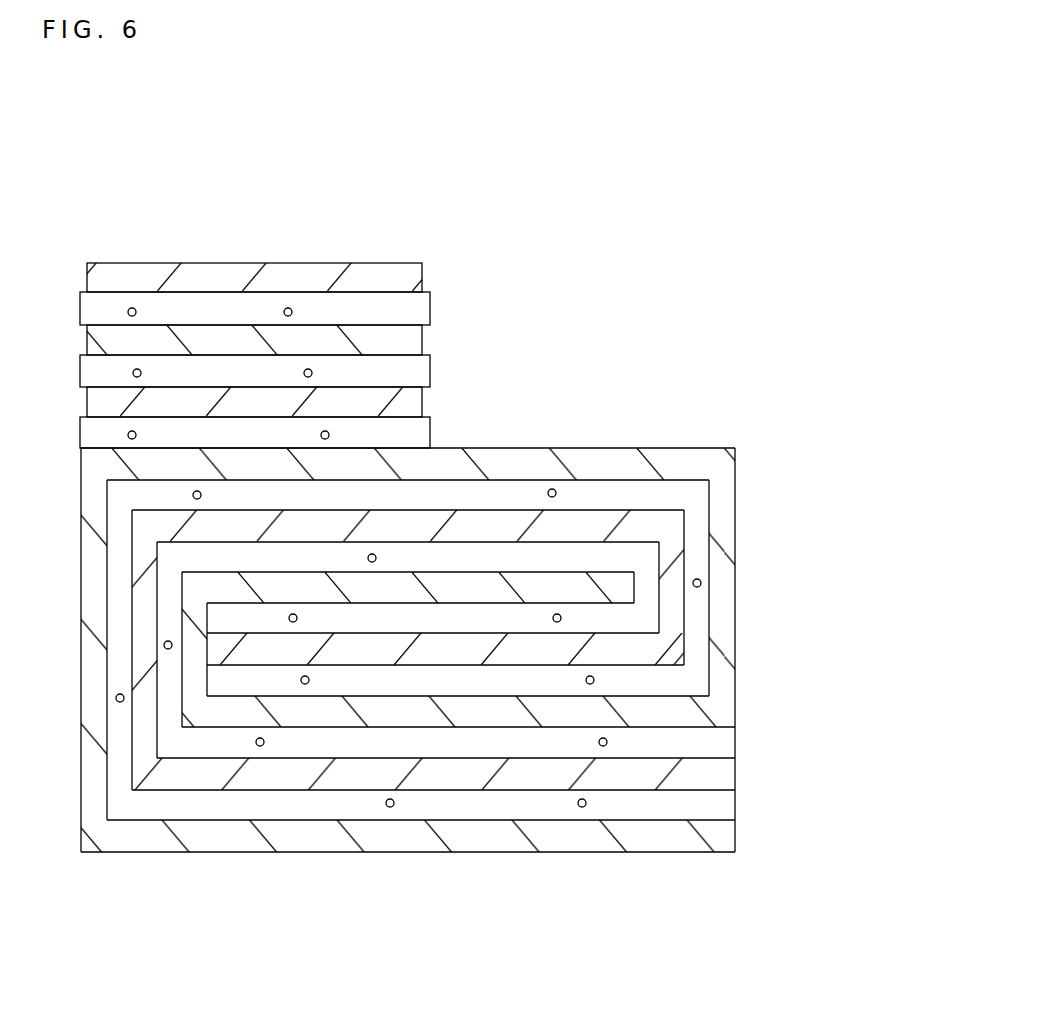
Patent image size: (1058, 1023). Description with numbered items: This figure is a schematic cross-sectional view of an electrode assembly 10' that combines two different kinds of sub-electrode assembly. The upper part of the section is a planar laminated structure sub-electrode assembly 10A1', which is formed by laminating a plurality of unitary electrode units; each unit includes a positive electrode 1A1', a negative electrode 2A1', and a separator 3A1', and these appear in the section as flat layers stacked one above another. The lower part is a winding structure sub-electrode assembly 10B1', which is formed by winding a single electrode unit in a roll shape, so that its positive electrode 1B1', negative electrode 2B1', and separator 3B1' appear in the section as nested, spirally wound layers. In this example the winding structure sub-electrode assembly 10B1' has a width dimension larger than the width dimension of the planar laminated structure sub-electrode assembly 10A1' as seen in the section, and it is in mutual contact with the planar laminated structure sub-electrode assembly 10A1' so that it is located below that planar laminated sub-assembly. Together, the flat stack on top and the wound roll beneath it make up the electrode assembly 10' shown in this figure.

The electrode assembly 10' is at (515, 545).
The planar laminated structure sub-electrode assembly 10A1' is at (358, 350).
The positive electrode 1A1' is at (309, 337).
The negative electrode 2A1' is at (309, 343).
The separator 3A1' is at (306, 370).
The winding structure sub-electrode assembly 10B1' is at (516, 646).
The positive electrode 1B1' is at (466, 650).
The negative electrode 2B1' is at (492, 650).
The separator 3B1' is at (484, 648).